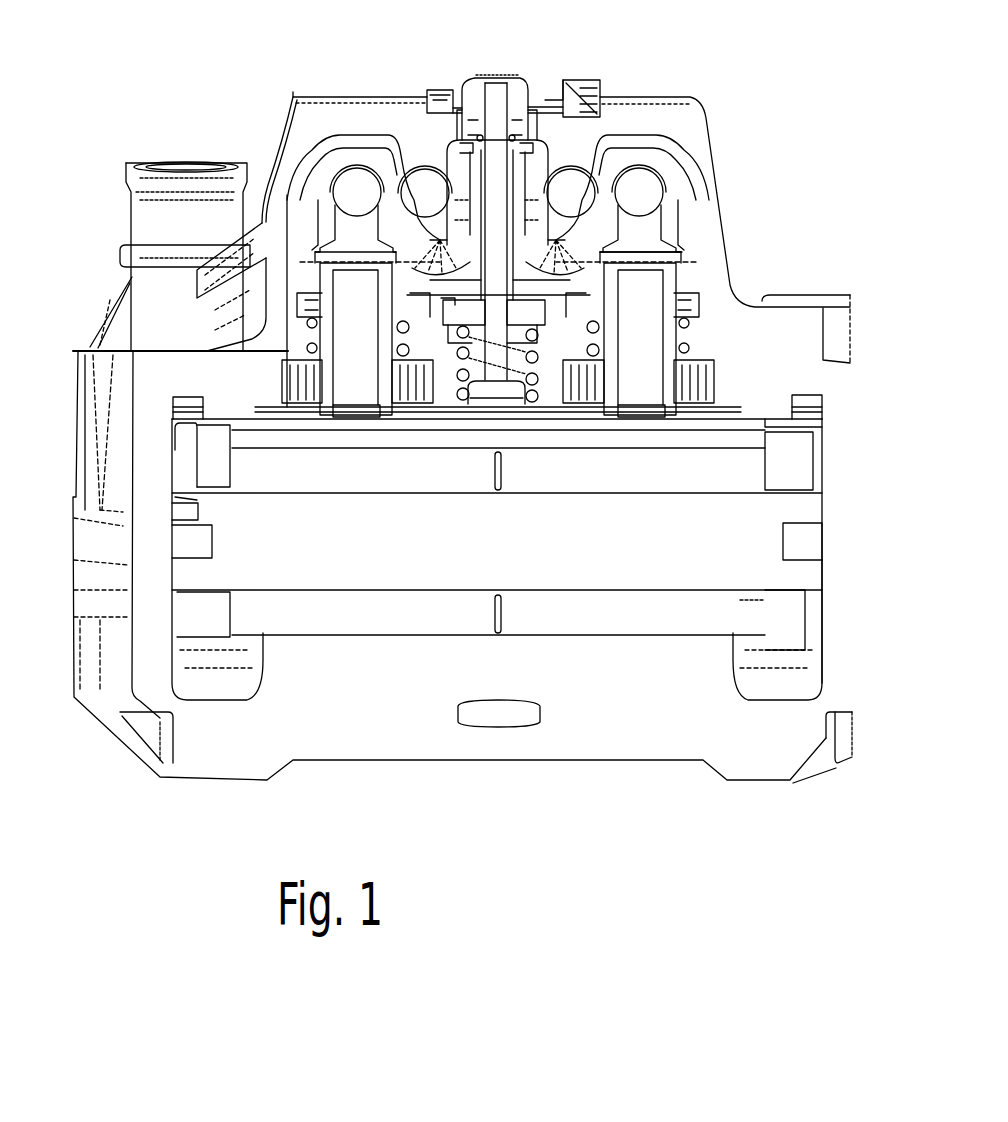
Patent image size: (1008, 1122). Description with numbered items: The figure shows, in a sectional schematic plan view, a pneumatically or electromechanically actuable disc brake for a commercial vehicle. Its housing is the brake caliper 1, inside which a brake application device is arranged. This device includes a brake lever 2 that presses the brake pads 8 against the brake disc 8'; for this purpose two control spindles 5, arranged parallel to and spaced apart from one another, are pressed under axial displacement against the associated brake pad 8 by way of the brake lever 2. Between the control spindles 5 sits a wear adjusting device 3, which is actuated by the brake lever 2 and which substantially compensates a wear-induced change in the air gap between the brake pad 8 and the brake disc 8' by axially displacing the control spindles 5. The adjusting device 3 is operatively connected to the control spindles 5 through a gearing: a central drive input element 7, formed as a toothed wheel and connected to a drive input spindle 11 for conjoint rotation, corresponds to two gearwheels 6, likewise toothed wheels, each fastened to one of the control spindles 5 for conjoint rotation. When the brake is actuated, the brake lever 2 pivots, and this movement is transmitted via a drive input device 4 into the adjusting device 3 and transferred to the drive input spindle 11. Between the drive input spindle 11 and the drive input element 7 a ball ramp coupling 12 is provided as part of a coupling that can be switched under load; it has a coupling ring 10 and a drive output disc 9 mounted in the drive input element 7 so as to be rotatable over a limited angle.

The brake caliper 1 is at (761, 342).
The brake lever 2 is at (583, 233).
The wear adjusting device 3 is at (518, 277).
The drive input device 4 is at (536, 121).
The control spindles 5 is at (362, 388).
The gearwheels 6 is at (441, 290).
The drive input element 7 is at (457, 290).
The brake pads 8 is at (497, 615).
The brake disc 8' is at (781, 704).
The drive output disc 9 is at (506, 360).
The coupling ring 10 is at (478, 320).
The drive input spindle 11 is at (520, 216).
The ball ramp coupling 12 is at (640, 251).